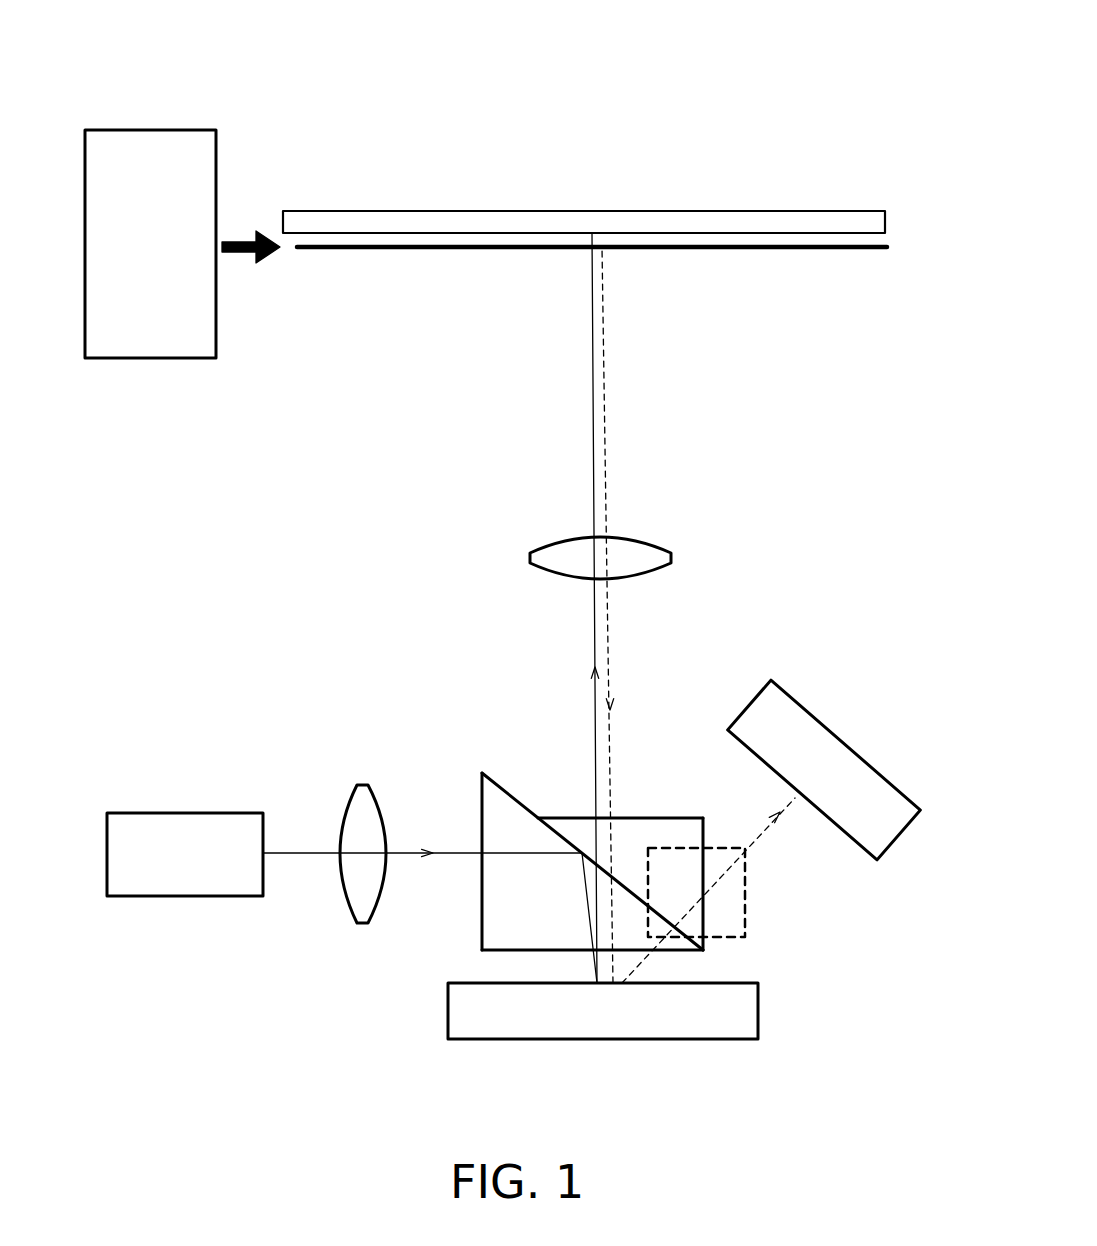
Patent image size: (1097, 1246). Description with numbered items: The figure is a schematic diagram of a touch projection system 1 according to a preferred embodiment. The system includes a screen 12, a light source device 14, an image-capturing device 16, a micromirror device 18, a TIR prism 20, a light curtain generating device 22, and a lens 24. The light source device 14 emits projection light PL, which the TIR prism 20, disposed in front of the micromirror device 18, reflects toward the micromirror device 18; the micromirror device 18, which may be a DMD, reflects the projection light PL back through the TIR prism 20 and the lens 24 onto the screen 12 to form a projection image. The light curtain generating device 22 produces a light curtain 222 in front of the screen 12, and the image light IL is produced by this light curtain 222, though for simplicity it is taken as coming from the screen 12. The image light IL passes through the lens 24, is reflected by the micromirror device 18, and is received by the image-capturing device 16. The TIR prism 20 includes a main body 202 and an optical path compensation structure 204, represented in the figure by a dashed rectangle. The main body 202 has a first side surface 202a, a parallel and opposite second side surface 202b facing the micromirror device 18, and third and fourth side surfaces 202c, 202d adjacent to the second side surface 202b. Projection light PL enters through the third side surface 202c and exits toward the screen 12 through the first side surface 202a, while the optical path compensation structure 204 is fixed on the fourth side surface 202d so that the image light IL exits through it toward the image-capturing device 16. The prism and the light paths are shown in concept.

The touch projection system 1 is at (788, 76).
The screen 12 is at (777, 211).
The light source device 14 is at (180, 897).
The image-capturing device 16 is at (823, 722).
The micromirror device 18 is at (678, 1040).
The TIR prism 20 is at (687, 698).
The light curtain generating device 22 is at (180, 358).
The lens 24 is at (648, 542).
The main body 202 is at (566, 855).
The first side surface 202a is at (631, 816).
The second side surface 202b is at (501, 957).
The third side surface 202c is at (478, 888).
The fourth side surface 202d is at (706, 826).
The optical path compensation structure 204 is at (745, 912).
The light curtain 222 is at (797, 250).
The projection light PL is at (590, 413).
The image light IL is at (606, 410).